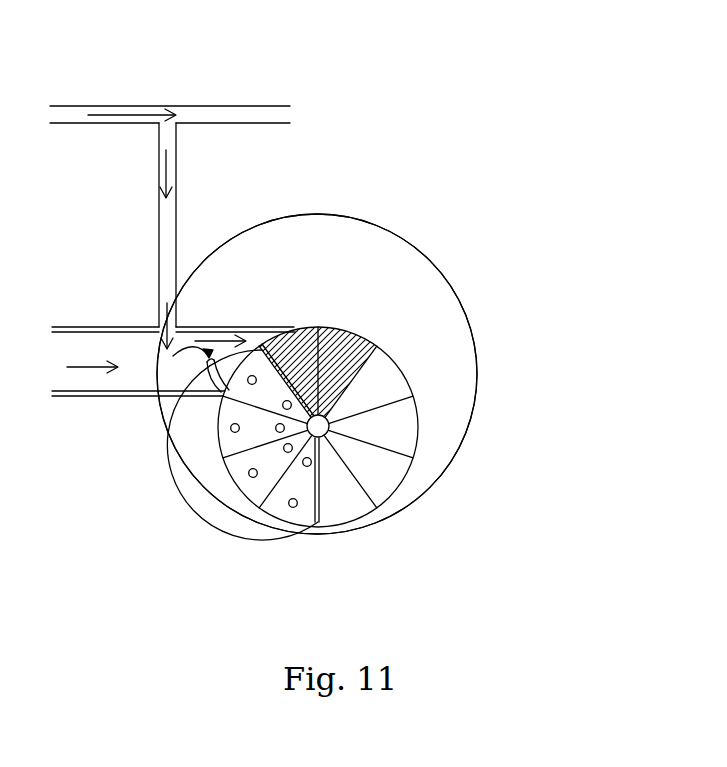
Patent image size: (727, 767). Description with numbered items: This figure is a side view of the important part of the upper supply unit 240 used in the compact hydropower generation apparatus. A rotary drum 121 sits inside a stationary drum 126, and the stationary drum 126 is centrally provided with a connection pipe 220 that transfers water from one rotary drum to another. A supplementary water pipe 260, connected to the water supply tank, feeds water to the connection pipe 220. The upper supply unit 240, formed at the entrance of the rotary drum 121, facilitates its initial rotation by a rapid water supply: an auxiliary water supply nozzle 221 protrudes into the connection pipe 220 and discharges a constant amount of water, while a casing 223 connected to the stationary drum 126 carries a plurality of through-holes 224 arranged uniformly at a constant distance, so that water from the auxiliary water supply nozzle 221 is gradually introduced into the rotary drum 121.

The supplementary water pipe 260 is at (222, 113).
The stationary drum 126 is at (355, 217).
The upper supply unit 240 is at (461, 252).
The rotary drum 121 is at (418, 437).
The connection pipe 220 is at (80, 394).
The auxiliary water supply nozzle 221 is at (213, 377).
The casing 223 is at (317, 492).
The through-holes 224 is at (290, 506).